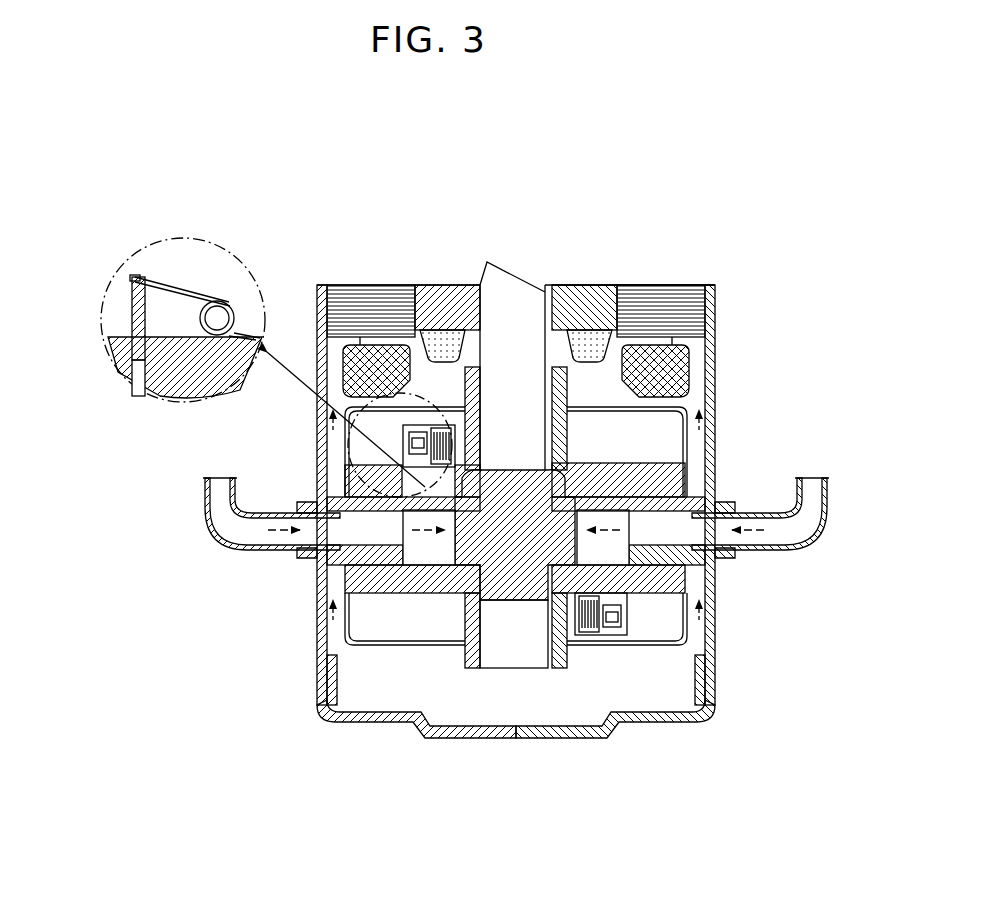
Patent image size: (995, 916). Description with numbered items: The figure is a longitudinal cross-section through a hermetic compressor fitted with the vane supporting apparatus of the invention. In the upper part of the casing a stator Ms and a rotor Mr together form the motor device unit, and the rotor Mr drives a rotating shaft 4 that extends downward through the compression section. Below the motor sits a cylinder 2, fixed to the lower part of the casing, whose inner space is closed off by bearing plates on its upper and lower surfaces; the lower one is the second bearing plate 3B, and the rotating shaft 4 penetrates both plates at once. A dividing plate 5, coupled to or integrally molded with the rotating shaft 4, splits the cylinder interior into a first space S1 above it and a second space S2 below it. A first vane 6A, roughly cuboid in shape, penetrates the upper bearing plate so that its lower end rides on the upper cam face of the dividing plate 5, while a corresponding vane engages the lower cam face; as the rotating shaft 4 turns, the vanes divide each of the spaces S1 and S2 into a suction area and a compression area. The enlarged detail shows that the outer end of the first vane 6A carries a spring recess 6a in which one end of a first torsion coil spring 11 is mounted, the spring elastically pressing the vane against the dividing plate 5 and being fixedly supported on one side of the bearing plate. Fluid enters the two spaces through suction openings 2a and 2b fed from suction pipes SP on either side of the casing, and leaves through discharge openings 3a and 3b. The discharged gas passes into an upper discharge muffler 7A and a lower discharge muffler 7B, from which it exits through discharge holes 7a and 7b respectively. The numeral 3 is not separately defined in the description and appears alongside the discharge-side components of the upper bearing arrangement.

The cylinder 2 is at (320, 578).
The suction opening 2a is at (688, 495).
The suction opening 2b is at (345, 492).
The upper bearing 3 is at (400, 450).
The discharge opening 3a is at (340, 420).
The discharge opening 3b is at (715, 615).
The second bearing plate 3B is at (345, 575).
The rotating shaft 4 is at (513, 300).
The dividing plate 5 is at (690, 575).
The spring recess 6a is at (133, 277).
The first vane 6A is at (133, 318).
The discharge muffler 7A is at (690, 362).
The discharge hole 7a is at (692, 390).
The discharge muffler 7B is at (415, 640).
The discharge hole 7b is at (385, 645).
The first torsion coil spring 11 is at (195, 292).
The stator Ms is at (367, 337).
The rotor Mr is at (450, 330).
The first space S1 is at (690, 450).
The second space S2 is at (340, 630).
The suction pipe SP is at (228, 522).